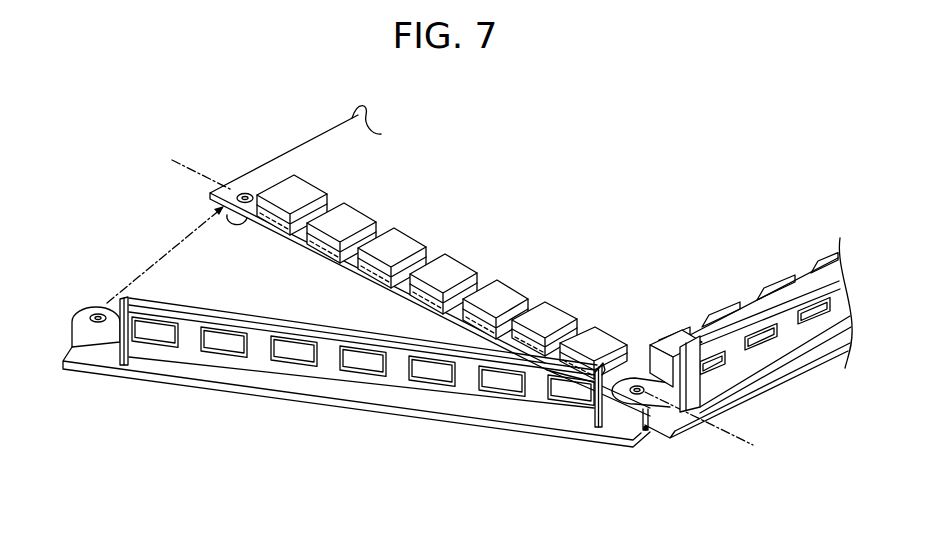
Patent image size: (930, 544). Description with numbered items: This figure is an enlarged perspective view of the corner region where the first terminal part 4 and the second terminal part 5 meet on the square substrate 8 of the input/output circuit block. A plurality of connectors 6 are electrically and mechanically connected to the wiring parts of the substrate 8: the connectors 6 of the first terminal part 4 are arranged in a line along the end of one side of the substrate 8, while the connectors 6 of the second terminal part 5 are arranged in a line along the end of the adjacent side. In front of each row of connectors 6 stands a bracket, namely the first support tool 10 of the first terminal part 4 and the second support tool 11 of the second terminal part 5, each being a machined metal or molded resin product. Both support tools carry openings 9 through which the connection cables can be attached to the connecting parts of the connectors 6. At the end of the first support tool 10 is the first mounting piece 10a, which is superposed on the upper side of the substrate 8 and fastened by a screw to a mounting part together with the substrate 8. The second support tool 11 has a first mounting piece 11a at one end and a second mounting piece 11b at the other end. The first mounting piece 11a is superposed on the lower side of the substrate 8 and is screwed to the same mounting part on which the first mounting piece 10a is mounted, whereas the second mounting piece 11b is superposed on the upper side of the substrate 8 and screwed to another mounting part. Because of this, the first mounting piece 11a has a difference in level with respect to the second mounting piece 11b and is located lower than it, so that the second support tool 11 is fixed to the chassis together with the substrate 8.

The first terminal part 4 is at (833, 368).
The second terminal part 5 is at (243, 278).
The connectors 6 is at (457, 268).
The substrate 8 is at (327, 168).
The openings 9 is at (753, 332).
The first support tool 10 is at (790, 363).
The first mounting piece 10a is at (647, 407).
The second support tool 11 is at (317, 383).
The first mounting piece 11a is at (613, 400).
The second mounting piece 11b is at (87, 323).